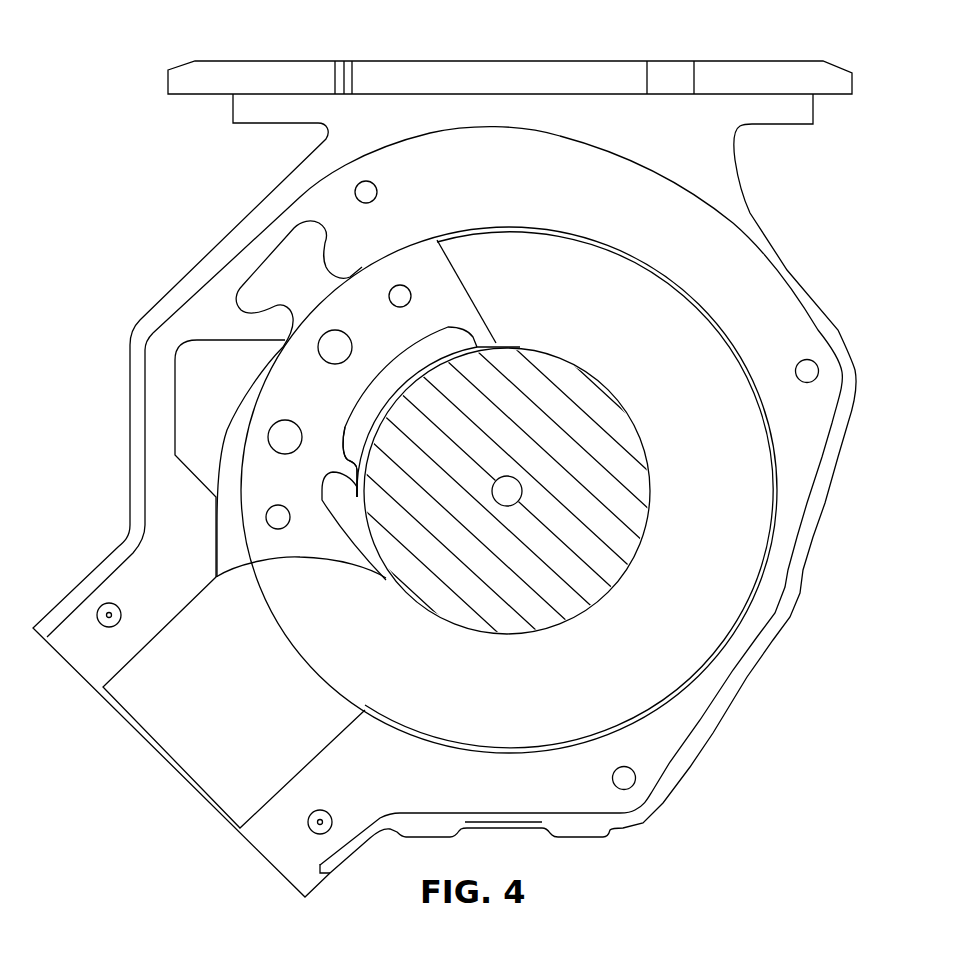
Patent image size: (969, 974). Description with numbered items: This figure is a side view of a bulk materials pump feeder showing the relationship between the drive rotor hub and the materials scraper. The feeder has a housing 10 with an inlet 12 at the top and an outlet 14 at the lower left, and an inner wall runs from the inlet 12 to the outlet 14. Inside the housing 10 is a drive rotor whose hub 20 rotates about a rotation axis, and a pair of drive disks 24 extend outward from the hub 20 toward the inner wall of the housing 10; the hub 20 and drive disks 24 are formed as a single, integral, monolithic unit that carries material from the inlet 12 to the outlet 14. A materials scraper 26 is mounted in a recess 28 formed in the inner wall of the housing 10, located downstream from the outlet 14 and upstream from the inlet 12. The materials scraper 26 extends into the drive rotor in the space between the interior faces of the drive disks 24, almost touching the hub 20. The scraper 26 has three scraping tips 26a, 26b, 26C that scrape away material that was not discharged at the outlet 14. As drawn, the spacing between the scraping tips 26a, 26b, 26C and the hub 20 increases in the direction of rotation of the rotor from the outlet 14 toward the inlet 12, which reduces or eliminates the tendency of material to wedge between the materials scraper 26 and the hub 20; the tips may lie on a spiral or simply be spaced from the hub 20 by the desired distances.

The housing 10 is at (810, 298).
The inlet 12 is at (365, 70).
The outlet 14 is at (302, 768).
The hub 20 is at (627, 568).
The drive disks 24 is at (747, 510).
The materials scraper 26 is at (470, 290).
The scraping tip 26a is at (520, 345).
The scraping tip 26b is at (352, 470).
The scraping tip 26C is at (385, 578).
The recess 28 is at (327, 229).